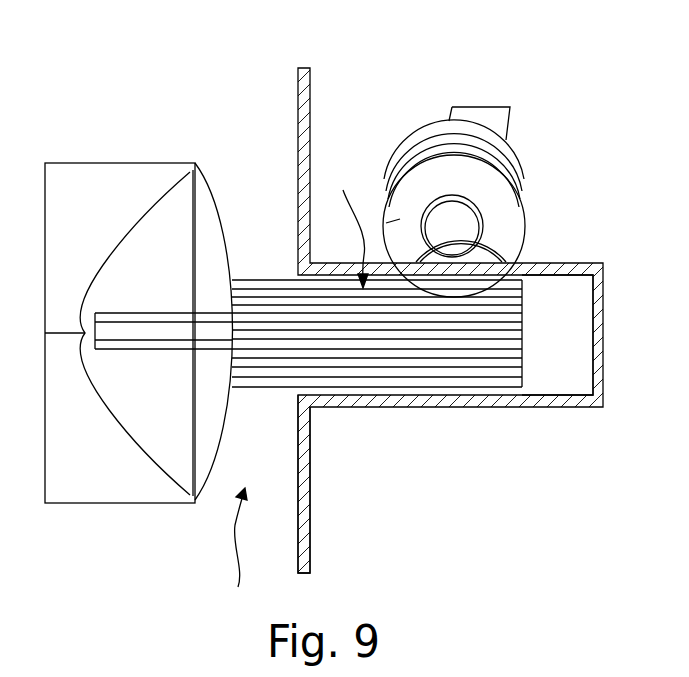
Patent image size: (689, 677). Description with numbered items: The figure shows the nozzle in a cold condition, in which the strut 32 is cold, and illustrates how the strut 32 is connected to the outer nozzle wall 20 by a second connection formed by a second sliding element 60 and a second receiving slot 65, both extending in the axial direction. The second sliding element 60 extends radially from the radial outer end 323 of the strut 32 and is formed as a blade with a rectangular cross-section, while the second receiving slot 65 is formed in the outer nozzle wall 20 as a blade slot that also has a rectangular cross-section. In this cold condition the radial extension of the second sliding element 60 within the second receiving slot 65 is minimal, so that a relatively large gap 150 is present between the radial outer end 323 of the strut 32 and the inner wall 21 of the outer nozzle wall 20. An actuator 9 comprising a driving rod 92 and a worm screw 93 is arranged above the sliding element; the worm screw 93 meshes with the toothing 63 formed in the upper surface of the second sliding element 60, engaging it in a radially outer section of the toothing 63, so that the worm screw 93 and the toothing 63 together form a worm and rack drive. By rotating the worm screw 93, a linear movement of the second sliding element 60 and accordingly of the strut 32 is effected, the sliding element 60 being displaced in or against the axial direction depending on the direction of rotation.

The actuator 9 is at (432, 99).
The driving rod 92 is at (497, 120).
The worm screw 93 is at (510, 173).
The radial outer end 323 is at (219, 203).
The toothing 63 is at (349, 227).
The strut 32 is at (138, 488).
The second sliding element 60 is at (432, 388).
The second receiving slot 65 is at (553, 373).
The outer nozzle wall 20 is at (506, 537).
The inner wall 21 is at (300, 550).
The gap 150 is at (242, 553).